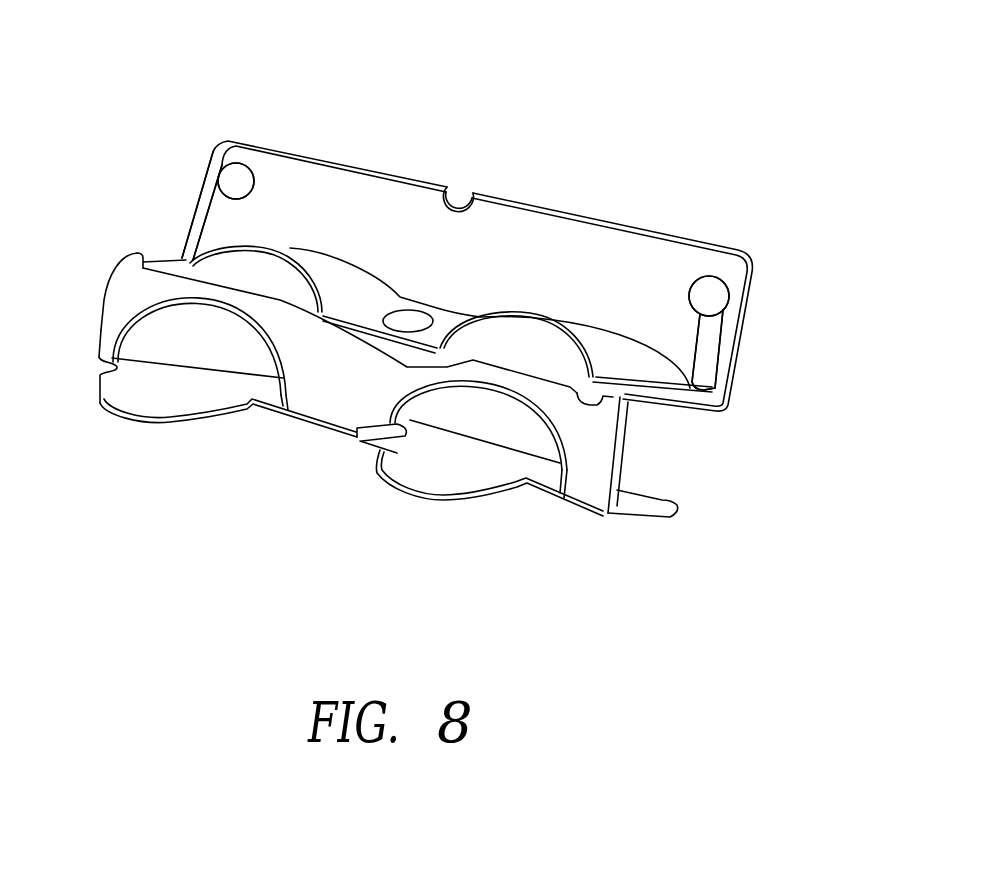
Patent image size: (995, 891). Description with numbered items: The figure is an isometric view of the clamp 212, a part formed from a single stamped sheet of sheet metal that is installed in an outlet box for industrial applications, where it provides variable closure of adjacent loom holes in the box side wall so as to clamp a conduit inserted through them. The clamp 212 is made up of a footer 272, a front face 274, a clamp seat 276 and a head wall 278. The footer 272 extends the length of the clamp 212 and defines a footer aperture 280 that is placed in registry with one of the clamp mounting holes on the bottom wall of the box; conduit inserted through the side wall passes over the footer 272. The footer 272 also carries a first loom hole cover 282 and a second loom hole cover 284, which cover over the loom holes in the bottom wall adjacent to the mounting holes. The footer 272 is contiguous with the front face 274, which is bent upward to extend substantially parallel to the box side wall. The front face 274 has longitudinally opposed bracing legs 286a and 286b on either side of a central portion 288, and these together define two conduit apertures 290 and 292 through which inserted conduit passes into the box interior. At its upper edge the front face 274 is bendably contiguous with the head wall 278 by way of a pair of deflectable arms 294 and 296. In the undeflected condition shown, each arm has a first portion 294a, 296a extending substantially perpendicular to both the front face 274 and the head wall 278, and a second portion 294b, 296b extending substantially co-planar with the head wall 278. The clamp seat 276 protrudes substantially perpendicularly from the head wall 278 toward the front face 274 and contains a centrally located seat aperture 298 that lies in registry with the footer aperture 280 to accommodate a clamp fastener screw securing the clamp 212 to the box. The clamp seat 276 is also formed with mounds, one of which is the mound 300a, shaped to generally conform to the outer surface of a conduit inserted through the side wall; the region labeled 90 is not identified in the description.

The clamp 212 is at (74, 34).
The footer 272 is at (660, 504).
The front face 274 is at (133, 283).
The clamp seat 276 is at (372, 292).
The head wall 278 is at (580, 238).
The footer aperture 280 is at (375, 440).
The first loom hole cover 282 is at (126, 397).
The second loom hole cover 284 is at (486, 488).
The bracing leg 286a is at (115, 318).
The bracing leg 286b is at (592, 440).
The central portion 288 is at (337, 400).
The conduit aperture 290 is at (220, 346).
The conduit aperture 292 is at (476, 447).
The deflectable arm 294 is at (130, 108).
The first portion 294a is at (152, 255).
The second portion 294b is at (202, 193).
The deflectable arm 296 is at (823, 318).
The first portion 296a is at (670, 407).
The second portion 296b is at (745, 350).
The seat aperture 298 is at (407, 313).
The mound 300a is at (323, 263).
The right saddle 90 is at (617, 338).